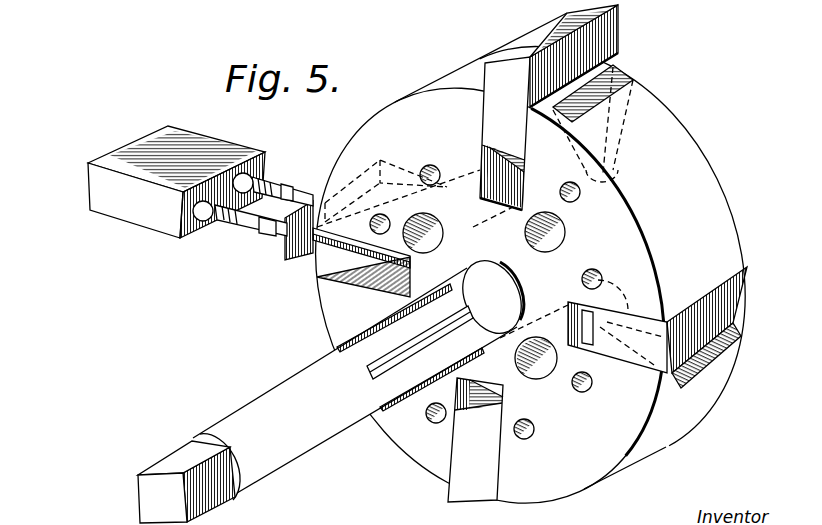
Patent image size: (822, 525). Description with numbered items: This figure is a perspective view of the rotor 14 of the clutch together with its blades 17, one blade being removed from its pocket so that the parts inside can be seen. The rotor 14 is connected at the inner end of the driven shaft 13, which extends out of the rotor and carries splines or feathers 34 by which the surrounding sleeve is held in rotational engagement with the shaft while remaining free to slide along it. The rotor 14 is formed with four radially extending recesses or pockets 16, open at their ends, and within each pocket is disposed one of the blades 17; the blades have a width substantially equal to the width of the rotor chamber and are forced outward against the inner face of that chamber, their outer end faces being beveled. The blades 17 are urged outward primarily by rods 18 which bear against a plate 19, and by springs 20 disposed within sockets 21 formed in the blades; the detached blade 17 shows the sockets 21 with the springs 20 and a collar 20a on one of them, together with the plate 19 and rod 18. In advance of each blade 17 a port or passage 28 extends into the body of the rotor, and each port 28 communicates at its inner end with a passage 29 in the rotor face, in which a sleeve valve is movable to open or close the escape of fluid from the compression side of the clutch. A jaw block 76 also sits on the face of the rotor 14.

The driven shaft 13 is at (268, 390).
The rotor 14 is at (537, 293).
The radially extending recesses or pockets 16 is at (516, 188).
The blades 17 is at (614, 40).
The rods 18 is at (356, 251).
The plate 19 is at (297, 258).
The springs 20 is at (271, 186).
The collar on pin 20a is at (262, 234).
The sockets 21 is at (251, 177).
The port or passage 28 is at (618, 68).
The passage 29 is at (434, 229).
The splines or feathers 34 is at (342, 354).
The lower jaw block 76 is at (472, 392).